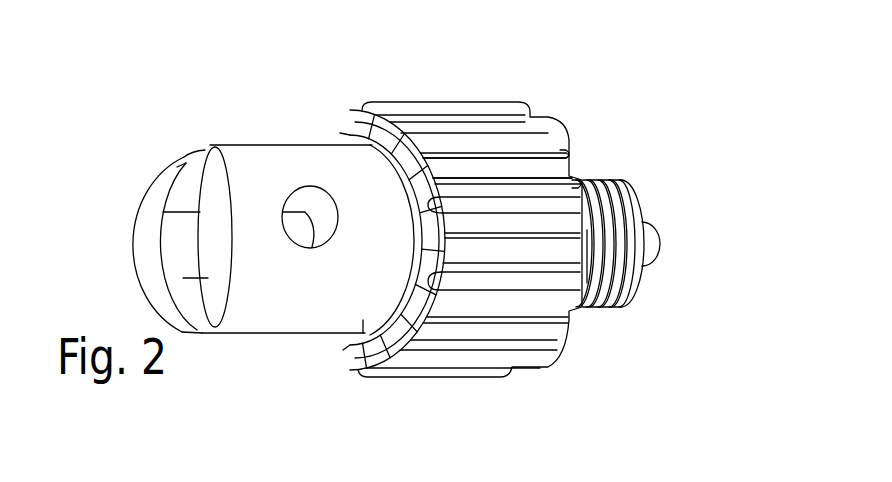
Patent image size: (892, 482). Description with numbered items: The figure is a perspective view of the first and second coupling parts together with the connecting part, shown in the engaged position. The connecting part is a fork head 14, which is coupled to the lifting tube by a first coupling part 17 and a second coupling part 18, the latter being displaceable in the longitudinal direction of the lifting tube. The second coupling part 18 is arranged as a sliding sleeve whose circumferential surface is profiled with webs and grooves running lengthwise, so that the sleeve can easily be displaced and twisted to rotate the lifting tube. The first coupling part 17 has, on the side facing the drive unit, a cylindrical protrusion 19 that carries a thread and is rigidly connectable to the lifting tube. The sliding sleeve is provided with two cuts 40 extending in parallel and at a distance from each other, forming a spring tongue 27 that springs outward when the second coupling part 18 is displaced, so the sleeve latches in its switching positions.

The fork head 14 is at (267, 167).
The second coupling part 18 is at (473, 142).
The spring tongue 27 is at (530, 172).
The cuts 40 is at (572, 183).
The first coupling part 17 is at (650, 186).
The cylindrical protrusion 19 is at (632, 290).